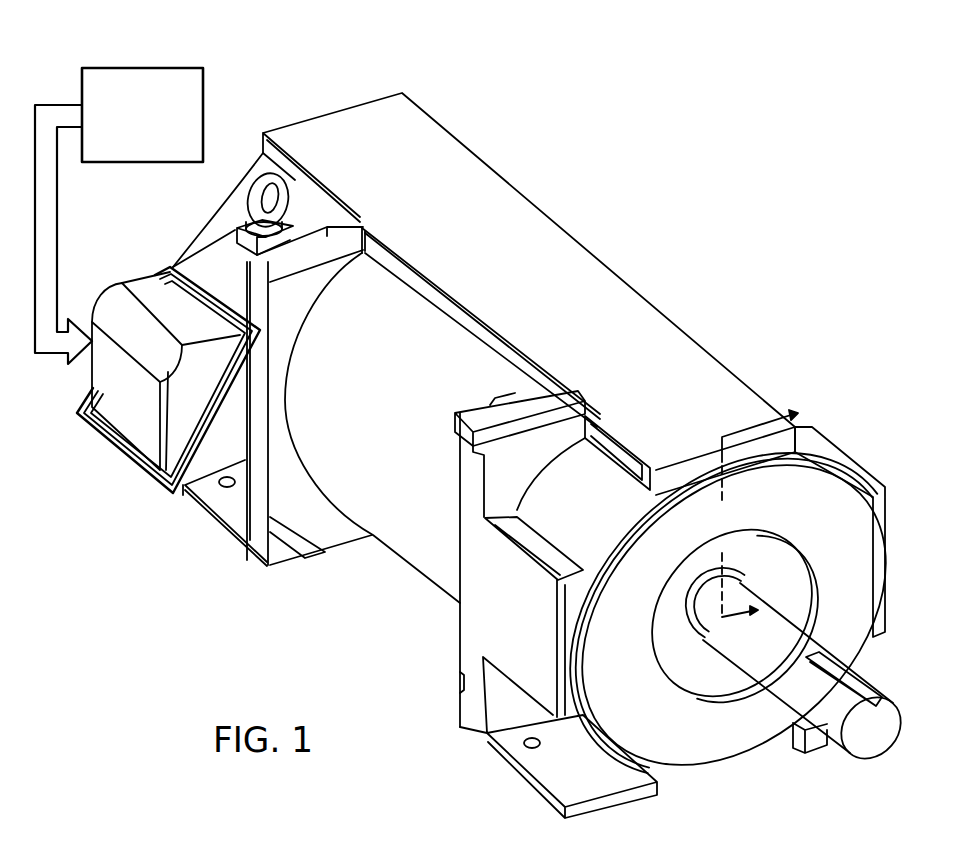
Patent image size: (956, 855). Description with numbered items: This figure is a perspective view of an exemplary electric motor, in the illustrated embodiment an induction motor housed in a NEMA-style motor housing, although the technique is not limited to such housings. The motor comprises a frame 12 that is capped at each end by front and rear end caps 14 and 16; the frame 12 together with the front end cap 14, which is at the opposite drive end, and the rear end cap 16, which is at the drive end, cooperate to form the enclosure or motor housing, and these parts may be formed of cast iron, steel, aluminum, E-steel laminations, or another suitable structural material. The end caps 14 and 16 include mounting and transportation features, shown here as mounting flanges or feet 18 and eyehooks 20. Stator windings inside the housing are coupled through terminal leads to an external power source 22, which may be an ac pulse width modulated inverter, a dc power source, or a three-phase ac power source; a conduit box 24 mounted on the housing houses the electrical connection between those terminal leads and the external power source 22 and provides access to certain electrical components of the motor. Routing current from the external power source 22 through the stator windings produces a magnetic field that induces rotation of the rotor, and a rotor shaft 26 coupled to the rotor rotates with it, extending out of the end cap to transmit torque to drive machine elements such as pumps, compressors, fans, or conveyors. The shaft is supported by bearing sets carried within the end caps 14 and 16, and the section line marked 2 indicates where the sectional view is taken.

The section line 2- 2 is at (771, 518).
The frame 12 is at (410, 522).
The front end cap 14 is at (745, 492).
The rear end cap 16 is at (222, 226).
The mounting flanges (feet) 18 is at (535, 763).
The eyehooks 20 is at (250, 190).
The external power source 22 is at (125, 68).
The conduit box 24 is at (107, 300).
The rotor shaft 26 is at (797, 681).